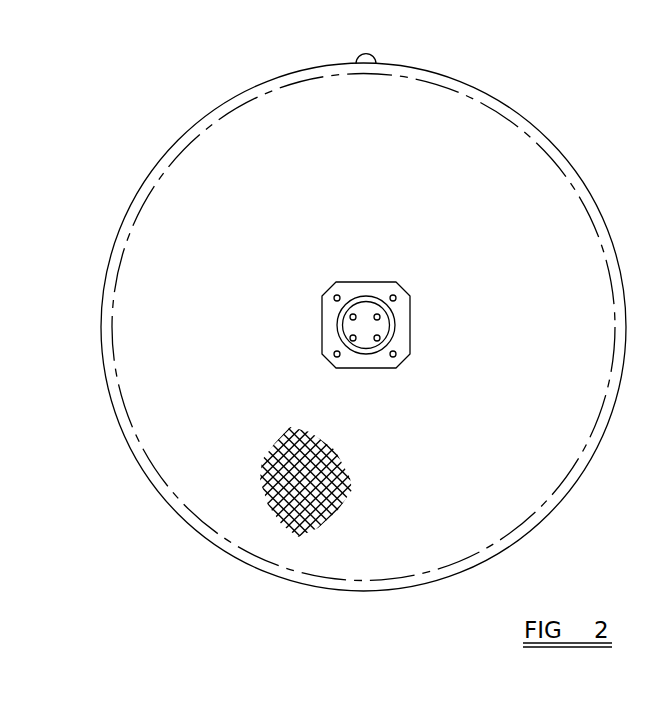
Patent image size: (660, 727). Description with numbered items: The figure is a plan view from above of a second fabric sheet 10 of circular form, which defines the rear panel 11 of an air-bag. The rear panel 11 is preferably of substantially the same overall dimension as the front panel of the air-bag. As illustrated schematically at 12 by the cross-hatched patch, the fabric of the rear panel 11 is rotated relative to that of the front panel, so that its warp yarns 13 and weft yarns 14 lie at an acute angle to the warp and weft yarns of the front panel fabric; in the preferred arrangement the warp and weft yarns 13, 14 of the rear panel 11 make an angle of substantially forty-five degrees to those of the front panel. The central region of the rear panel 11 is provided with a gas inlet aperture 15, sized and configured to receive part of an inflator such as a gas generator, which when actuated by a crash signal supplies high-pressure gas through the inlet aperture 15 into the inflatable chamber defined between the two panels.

The second fabric sheet 10 is at (175, 554).
The rear panel 11 is at (468, 165).
The schematic illustration of fabric rotation 12 is at (281, 542).
The warp yarns 13 is at (303, 433).
The weft yarns 14 is at (313, 527).
The gas inlet aperture 15 is at (395, 327).